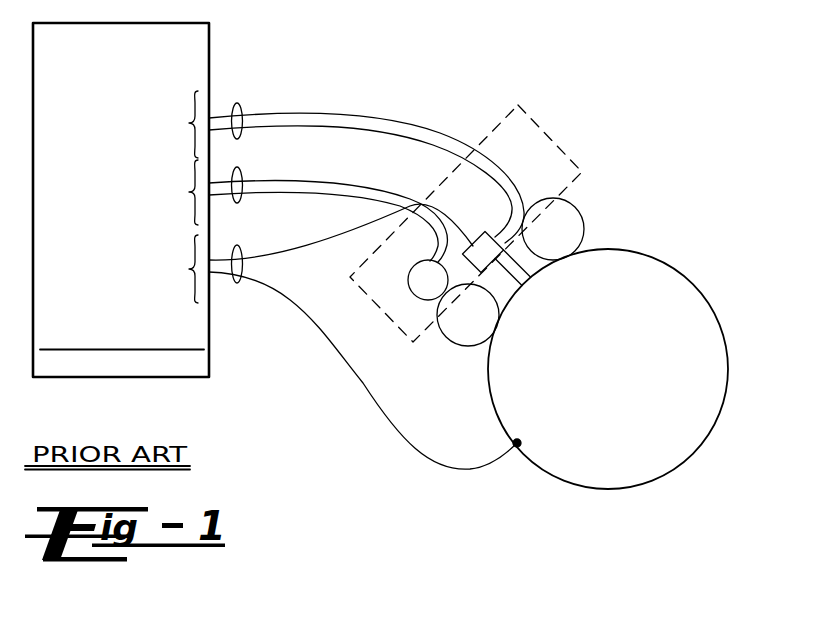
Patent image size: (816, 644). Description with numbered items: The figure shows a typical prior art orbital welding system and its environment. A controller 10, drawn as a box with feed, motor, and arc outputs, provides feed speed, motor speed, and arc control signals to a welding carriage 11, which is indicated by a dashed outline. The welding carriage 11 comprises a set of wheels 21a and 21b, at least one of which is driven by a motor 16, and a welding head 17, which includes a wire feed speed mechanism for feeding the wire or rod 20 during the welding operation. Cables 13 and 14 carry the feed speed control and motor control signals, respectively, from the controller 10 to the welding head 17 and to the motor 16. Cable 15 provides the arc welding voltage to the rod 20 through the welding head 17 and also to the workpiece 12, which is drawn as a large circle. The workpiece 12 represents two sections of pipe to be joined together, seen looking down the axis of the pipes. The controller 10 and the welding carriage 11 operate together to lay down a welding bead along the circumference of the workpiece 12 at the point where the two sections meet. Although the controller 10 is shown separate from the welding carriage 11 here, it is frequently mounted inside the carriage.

The controller 10 is at (86, 22).
The welding carriage 11 is at (498, 124).
The workpiece 12 is at (625, 248).
The cable 13 is at (238, 101).
The cable 14 is at (238, 168).
The cable 15 is at (236, 245).
The motor 16 is at (408, 288).
The welding head 17 is at (486, 228).
The wire or rod 20 is at (516, 279).
The wheel 21a is at (597, 199).
The wheel 21b is at (473, 346).